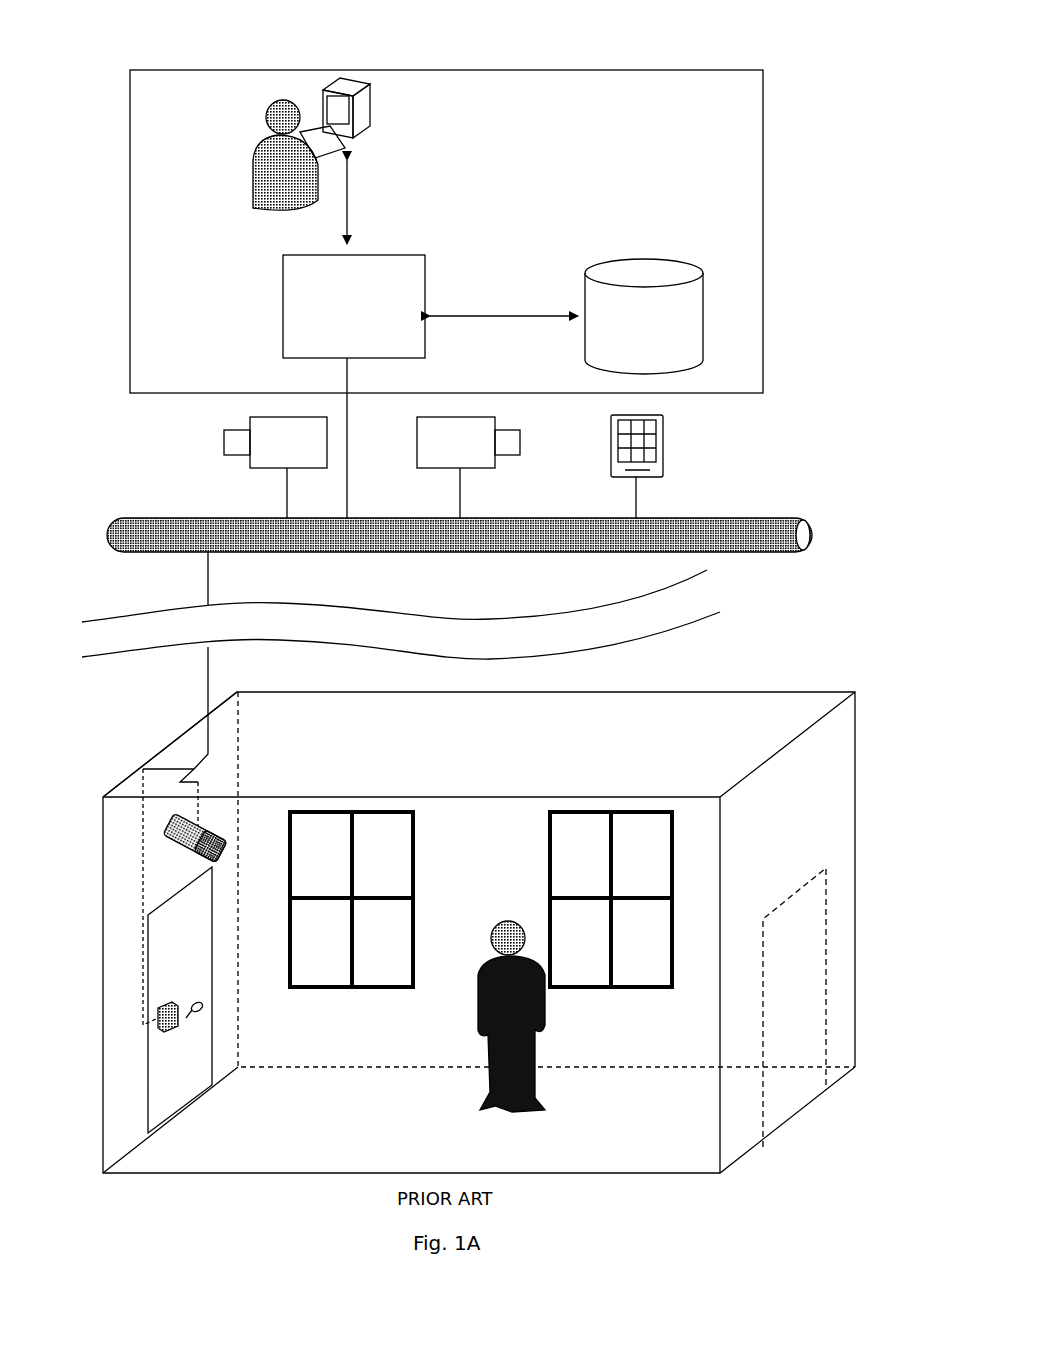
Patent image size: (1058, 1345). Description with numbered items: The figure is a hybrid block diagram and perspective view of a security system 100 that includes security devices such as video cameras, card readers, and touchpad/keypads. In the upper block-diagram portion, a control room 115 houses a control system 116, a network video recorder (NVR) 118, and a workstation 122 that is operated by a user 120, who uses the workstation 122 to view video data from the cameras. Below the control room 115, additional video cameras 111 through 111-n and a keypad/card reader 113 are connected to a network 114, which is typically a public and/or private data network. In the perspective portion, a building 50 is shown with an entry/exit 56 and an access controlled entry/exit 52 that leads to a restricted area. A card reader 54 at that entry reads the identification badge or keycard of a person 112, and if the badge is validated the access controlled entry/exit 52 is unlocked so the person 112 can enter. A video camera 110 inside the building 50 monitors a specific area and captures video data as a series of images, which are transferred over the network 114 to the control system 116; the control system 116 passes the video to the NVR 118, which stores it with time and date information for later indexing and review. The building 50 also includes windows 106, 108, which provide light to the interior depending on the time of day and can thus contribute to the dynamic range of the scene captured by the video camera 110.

The security system 100 is at (810, 56).
The control room 115 is at (274, 64).
The user 120 is at (264, 105).
The workstation 122 is at (372, 108).
The control system 116 is at (341, 325).
The network video recorder (NVR) 118 is at (631, 343).
The video camera 111 is at (262, 470).
The video camera 111-n is at (441, 470).
The touchpad/keypad 113 is at (609, 443).
The network 114 is at (516, 544).
The building 50 is at (180, 731).
The video camera 110 is at (210, 851).
The window 106 is at (414, 853).
The window 108 is at (548, 858).
The person 112 is at (500, 919).
The access controlled entry/exit 52 is at (148, 1092).
The card reader 54 is at (158, 1024).
The entry/exit 56 is at (798, 891).